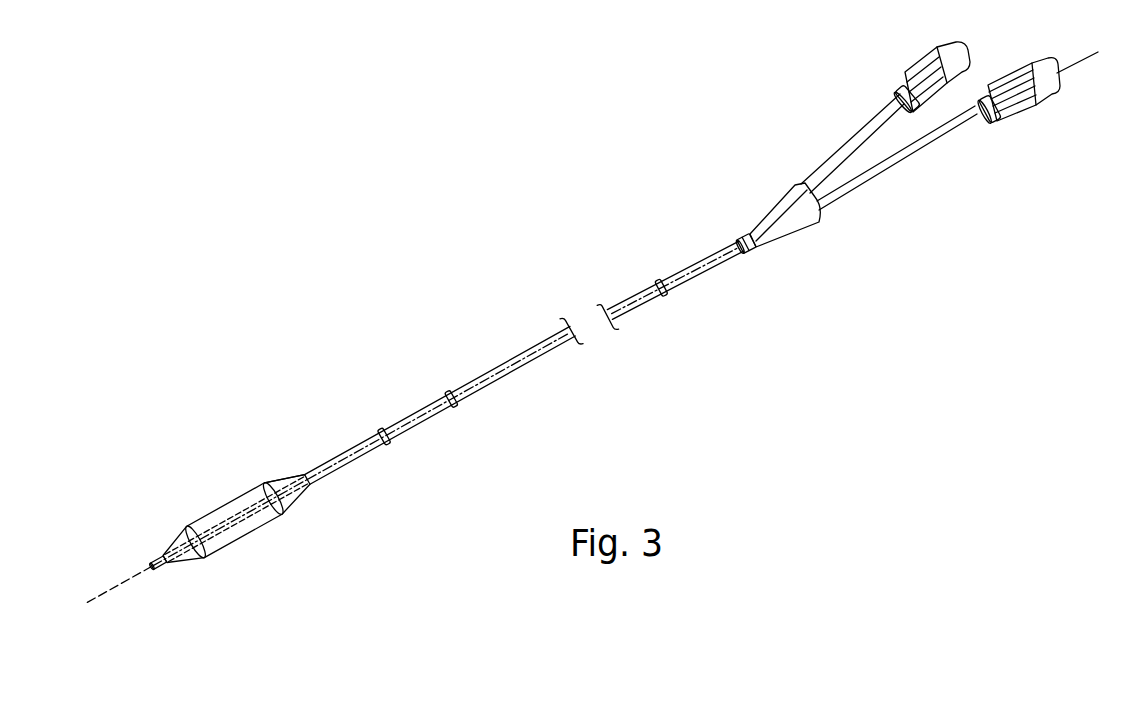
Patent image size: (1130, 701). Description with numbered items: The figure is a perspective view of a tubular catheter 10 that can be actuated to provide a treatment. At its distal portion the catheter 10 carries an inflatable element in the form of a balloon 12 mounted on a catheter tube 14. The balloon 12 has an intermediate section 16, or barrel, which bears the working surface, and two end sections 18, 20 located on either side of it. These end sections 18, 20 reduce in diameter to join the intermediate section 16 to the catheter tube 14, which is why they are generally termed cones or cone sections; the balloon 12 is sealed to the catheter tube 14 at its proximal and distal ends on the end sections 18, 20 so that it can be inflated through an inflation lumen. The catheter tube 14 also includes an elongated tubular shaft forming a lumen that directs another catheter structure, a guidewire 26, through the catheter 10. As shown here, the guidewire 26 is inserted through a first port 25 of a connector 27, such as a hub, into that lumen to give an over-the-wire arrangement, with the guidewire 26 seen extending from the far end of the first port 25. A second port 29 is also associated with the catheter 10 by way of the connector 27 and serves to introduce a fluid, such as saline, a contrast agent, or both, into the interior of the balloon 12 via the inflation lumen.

The catheter 10 is at (542, 302).
The balloon 12 is at (208, 509).
The catheter tube 14 is at (560, 351).
The intermediate section 16 is at (251, 490).
The end section 18 is at (288, 480).
The end section 20 is at (177, 549).
The first port 25 is at (888, 168).
The guidewire 26 is at (1073, 67).
The connector 27 is at (774, 206).
The second port 29 is at (867, 133).